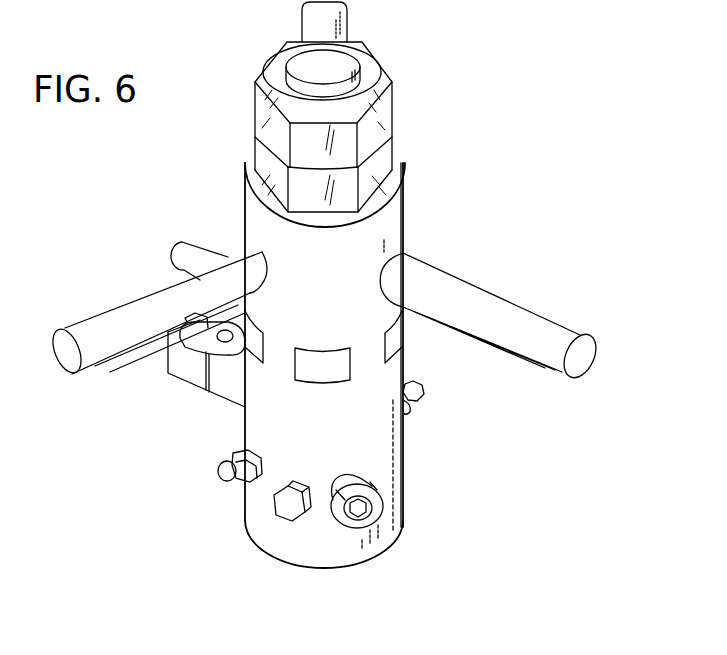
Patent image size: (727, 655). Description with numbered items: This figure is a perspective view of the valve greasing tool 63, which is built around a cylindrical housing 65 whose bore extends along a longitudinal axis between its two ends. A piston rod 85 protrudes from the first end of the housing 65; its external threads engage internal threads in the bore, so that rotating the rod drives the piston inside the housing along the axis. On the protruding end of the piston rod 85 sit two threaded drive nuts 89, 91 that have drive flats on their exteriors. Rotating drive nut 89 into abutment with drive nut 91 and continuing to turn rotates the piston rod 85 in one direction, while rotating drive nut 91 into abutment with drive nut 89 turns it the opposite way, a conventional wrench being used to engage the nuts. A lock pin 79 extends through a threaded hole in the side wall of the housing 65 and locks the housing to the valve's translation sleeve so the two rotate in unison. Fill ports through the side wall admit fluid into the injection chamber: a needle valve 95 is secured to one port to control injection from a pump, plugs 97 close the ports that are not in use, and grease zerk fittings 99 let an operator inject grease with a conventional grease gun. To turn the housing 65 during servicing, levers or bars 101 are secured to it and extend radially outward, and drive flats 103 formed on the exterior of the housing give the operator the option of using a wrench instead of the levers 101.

The valve greasing tool 63 is at (474, 136).
The cylindrical housing 65 is at (253, 223).
The lock pin 79 is at (380, 507).
The piston rod 85 is at (343, 68).
The drive nut 89 is at (380, 112).
The drive nut 91 is at (375, 162).
The needle valve 95 is at (193, 373).
The plug 97 is at (285, 508).
The grease zerk fitting 99 is at (424, 392).
The lever 101 is at (498, 313).
The drive flat 103 is at (333, 368).